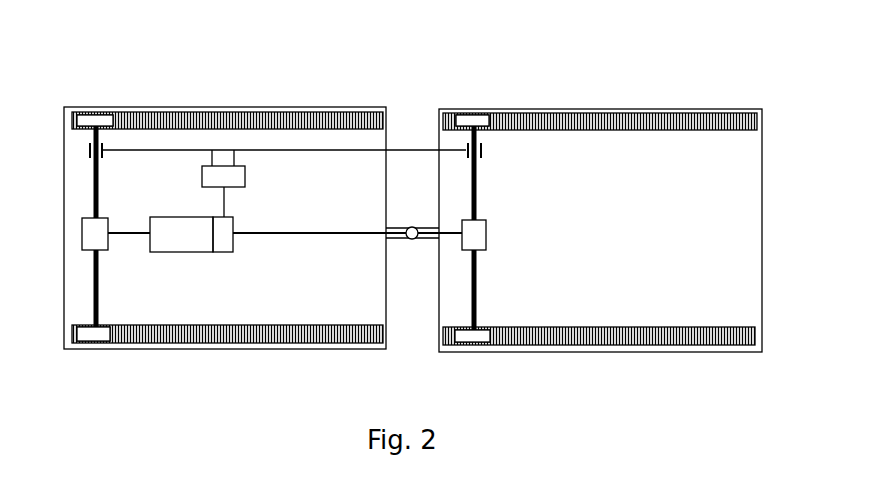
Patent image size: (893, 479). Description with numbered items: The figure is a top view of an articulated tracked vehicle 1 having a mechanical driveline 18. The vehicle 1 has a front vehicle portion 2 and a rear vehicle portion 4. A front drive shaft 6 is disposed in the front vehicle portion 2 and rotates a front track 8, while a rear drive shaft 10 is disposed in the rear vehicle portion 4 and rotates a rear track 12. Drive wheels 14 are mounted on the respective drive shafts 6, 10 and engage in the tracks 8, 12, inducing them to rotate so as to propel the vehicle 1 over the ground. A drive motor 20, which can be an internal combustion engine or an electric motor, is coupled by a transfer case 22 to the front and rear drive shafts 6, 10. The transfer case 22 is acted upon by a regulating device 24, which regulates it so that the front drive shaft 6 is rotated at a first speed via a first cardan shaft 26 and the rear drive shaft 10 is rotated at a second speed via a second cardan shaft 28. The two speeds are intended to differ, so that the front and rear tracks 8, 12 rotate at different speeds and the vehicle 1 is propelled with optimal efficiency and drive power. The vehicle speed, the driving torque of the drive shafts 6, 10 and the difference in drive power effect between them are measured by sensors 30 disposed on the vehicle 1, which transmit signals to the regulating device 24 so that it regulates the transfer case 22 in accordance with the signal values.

The articulated tracked vehicle 1 is at (418, 60).
The front vehicle portion 2 is at (262, 108).
The rear vehicle portion 4 is at (640, 108).
The front drive shaft 6 is at (118, 118).
The front track 8 is at (228, 113).
The rear drive shaft 10 is at (478, 183).
The rear track 12 is at (722, 118).
The drive wheels 14 is at (94, 115).
The mechanical driveline 18 is at (277, 228).
The drive motor 20 is at (205, 252).
The transfer case 22 is at (224, 252).
The regulating device 24 is at (246, 170).
The first cardan shaft 26 is at (133, 235).
The second cardan shaft 28 is at (310, 235).
The sensors 30 is at (103, 153).